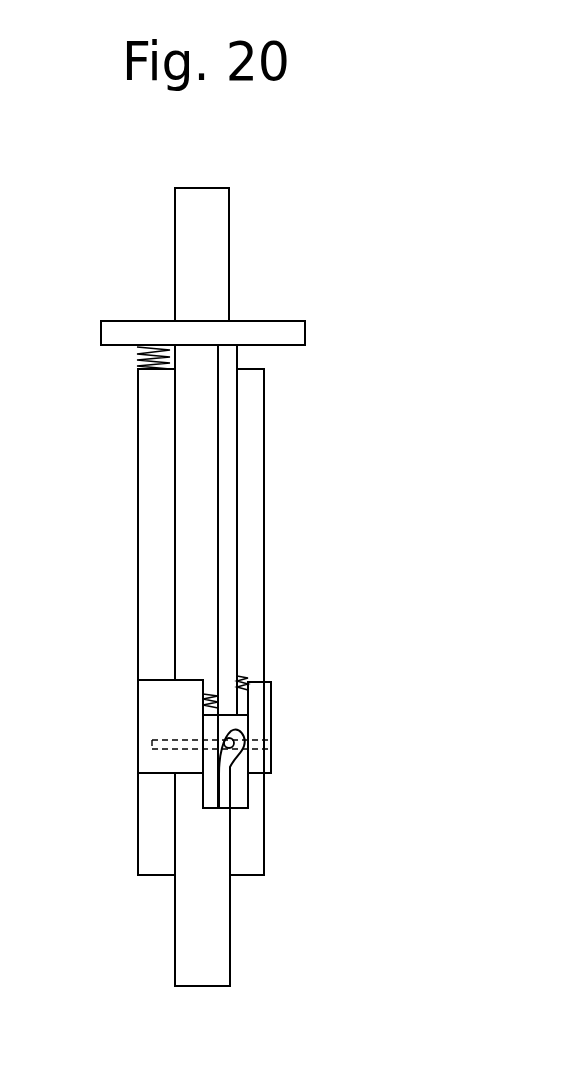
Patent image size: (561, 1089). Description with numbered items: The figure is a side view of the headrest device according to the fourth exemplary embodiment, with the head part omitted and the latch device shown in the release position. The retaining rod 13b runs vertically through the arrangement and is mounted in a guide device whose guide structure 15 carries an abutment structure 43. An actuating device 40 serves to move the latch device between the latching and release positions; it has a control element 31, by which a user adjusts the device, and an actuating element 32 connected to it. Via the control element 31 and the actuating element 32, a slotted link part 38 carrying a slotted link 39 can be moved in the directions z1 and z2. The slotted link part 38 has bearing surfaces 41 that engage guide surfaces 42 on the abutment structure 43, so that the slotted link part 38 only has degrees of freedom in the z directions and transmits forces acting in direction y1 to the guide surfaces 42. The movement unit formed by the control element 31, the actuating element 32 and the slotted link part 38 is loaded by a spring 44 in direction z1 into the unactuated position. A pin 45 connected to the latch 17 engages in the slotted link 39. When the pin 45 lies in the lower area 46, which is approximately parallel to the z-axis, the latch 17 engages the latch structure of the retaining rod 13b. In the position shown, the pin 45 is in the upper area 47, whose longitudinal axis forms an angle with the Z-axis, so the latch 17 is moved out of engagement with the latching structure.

The retaining rod 13b is at (197, 228).
The control element 31 is at (278, 335).
The spring 44 is at (135, 367).
The guide structure 15 is at (157, 495).
The actuating element 32 is at (228, 440).
The actuating device 40 is at (250, 407).
The abutment structure 43 is at (165, 697).
The slotted link part 38 is at (217, 728).
The bearing surfaces 41 is at (203, 797).
The guide surfaces 42 is at (203, 708).
The pin 45 is at (205, 737).
The upper area 47 is at (245, 755).
The slotted link 39 is at (243, 737).
The latch 17 is at (162, 752).
The lower area 46 is at (238, 797).